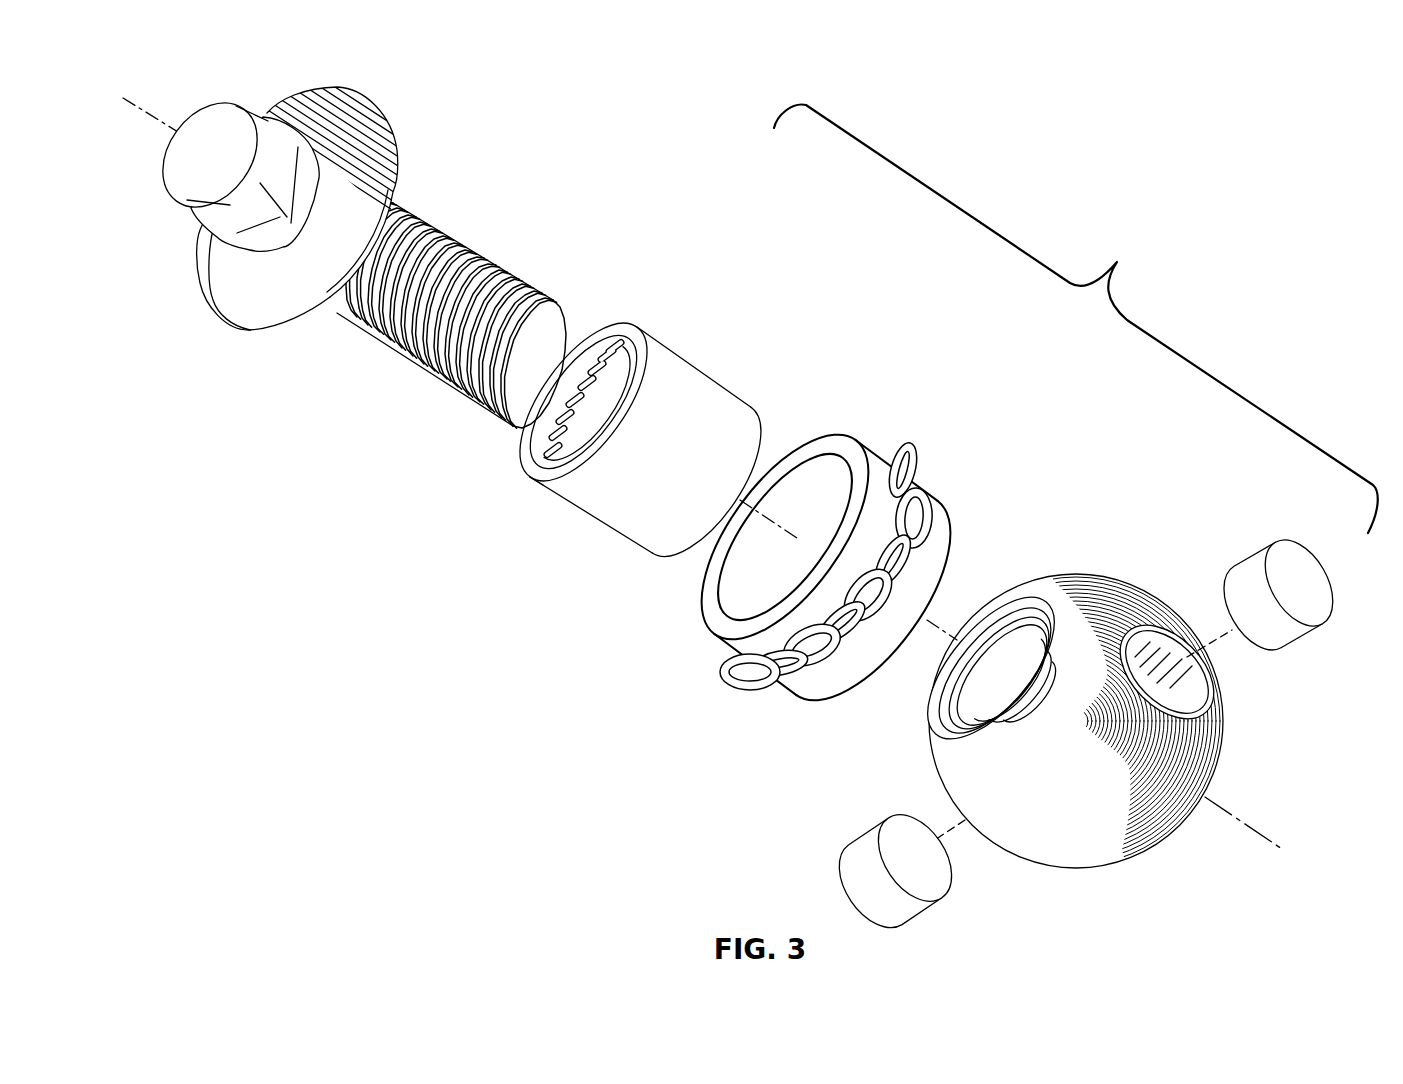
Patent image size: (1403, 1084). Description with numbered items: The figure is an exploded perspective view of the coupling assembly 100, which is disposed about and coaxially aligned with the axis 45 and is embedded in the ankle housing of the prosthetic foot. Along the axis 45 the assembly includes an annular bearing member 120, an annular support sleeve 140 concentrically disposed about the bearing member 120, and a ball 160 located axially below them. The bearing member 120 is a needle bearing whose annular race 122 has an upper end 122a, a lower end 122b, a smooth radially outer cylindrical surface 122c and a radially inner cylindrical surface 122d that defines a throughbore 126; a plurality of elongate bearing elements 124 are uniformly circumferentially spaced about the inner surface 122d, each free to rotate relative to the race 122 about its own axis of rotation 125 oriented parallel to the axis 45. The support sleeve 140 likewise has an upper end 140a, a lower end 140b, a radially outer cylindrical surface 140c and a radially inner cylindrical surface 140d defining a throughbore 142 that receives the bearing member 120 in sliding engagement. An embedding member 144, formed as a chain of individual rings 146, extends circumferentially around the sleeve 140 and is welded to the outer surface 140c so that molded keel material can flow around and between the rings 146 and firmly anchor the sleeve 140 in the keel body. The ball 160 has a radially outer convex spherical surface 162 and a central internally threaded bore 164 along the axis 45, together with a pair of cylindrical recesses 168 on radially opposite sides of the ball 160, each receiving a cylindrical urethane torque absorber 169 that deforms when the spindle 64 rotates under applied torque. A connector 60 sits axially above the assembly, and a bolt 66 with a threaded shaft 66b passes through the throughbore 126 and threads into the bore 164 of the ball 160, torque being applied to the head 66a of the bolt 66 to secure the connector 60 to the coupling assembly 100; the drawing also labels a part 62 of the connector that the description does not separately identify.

The axis 45 is at (152, 113).
The connector 60 is at (354, 234).
The bolt head 62 is at (309, 216).
The spindle 64 is at (212, 305).
The bolt 66 is at (448, 302).
The head 66a is at (233, 133).
The threaded shaft 66b is at (440, 233).
The coupling assembly 100 is at (1076, 319).
The bearing member 120 is at (629, 406).
The race 122 is at (629, 388).
The upper end 122a is at (634, 324).
The lower end 122b is at (757, 410).
The radially outer cylindrical surface 122c is at (583, 488).
The radially inner cylindrical surface 122d is at (523, 430).
The elongate bearing elements 124 is at (617, 353).
The axis of rotation 125 is at (588, 332).
The throughbore 126 is at (578, 370).
The support sleeve 140 is at (820, 557).
The upper end 140a is at (848, 427).
The lower end 140b is at (956, 498).
The radially outer cylindrical surface 140c is at (873, 463).
The radially inner cylindrical surface 140d is at (730, 603).
The throughbore 142 is at (760, 578).
The embedding member 144 is at (830, 568).
The rings 146 is at (931, 468).
The ball 160 is at (1101, 723).
The radially outer convex spherical surface 162 is at (1090, 840).
The internally threaded bore 164 is at (967, 702).
The recesses 168 is at (1168, 638).
The torque absorbers 169 is at (1277, 630).